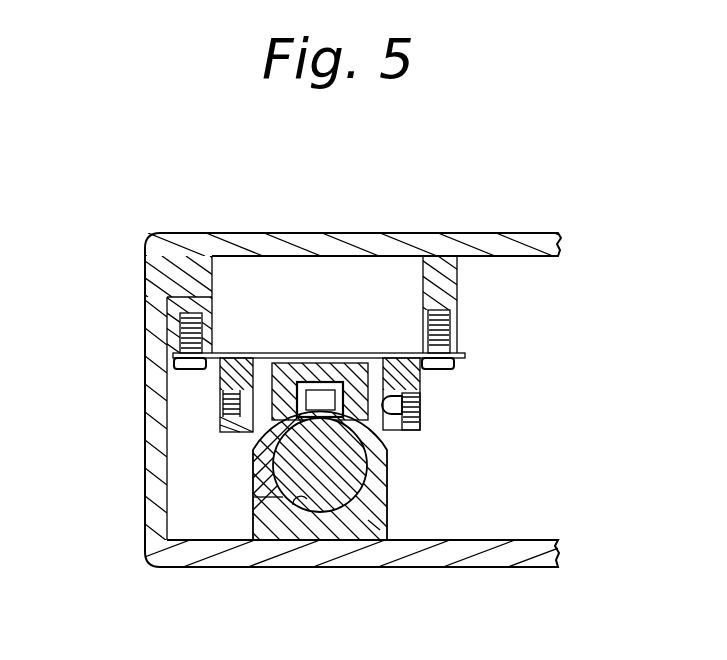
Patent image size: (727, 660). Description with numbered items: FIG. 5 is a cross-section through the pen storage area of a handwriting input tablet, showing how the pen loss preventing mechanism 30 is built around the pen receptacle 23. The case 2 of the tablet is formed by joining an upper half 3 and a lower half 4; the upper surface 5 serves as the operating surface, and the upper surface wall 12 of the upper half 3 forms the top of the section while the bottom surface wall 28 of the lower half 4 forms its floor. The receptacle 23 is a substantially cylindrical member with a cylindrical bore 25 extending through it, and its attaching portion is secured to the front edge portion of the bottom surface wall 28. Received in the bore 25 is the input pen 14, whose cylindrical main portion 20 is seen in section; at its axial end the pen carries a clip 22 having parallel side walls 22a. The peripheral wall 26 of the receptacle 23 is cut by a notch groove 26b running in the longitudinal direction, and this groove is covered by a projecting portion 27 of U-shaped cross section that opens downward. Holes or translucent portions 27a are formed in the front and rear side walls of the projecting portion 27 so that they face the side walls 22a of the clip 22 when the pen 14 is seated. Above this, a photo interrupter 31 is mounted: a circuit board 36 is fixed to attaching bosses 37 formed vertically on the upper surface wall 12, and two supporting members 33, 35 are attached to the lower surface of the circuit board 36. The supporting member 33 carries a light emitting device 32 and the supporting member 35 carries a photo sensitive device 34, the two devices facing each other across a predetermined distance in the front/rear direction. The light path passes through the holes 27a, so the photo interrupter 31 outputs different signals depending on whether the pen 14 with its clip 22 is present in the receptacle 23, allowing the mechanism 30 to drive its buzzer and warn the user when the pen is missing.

The case 2 is at (85, 268).
The upper case half 3 is at (150, 258).
The lower case half 4 is at (148, 352).
The upper surface 5 is at (524, 233).
The upper surface wall 12 is at (396, 232).
The input pen 14 is at (375, 510).
The main portion 20 is at (330, 513).
The clip 22 is at (328, 382).
The side walls 22a is at (262, 450).
The receptacle 23 is at (253, 507).
The cylindrical bore 25 is at (303, 505).
The peripheral wall 26 is at (390, 495).
The notch groove 26b is at (262, 497).
The projecting portion 27 is at (318, 382).
The holes 27a is at (296, 395).
The bottom surface wall 28 is at (541, 558).
The pen loss preventing mechanism 30 is at (556, 364).
The photo interrupter 31 is at (418, 430).
The light emitting device 32 is at (393, 395).
The supporting member 33 is at (425, 378).
The photo sensitive device 34 is at (245, 383).
The supporting member 35 is at (205, 368).
The circuit board 36 is at (349, 353).
The attaching bosses 37 is at (226, 265).